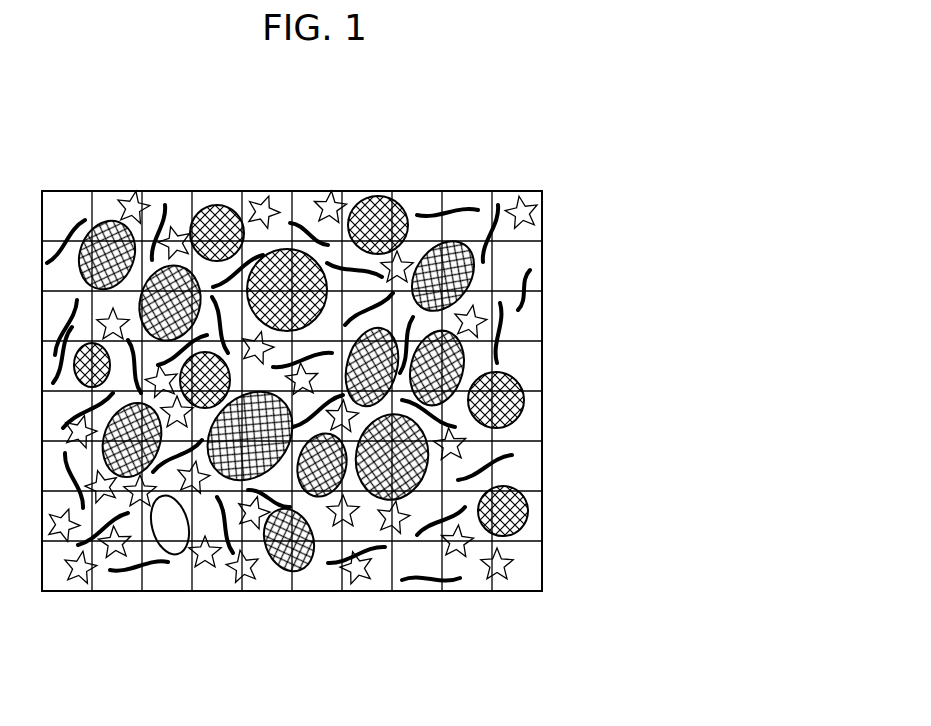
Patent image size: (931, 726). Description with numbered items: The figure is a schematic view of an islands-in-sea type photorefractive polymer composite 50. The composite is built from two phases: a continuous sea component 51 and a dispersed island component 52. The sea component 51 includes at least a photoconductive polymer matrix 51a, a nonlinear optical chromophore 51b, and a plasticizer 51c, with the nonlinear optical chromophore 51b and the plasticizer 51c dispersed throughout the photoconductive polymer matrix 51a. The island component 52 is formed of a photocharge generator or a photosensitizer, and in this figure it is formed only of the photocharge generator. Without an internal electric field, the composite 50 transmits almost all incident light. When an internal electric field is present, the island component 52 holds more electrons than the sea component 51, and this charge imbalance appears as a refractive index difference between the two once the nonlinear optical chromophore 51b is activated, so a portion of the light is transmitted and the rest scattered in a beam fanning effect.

The islands-in-sea type photorefractive polymer composite 50 is at (574, 174).
The sea component 51 is at (383, 193).
The photoconductive polymer matrix 51a is at (493, 267).
The nonlinear optical chromophore 51b is at (497, 207).
The plasticizer 51c is at (330, 207).
The island component 52 is at (482, 533).